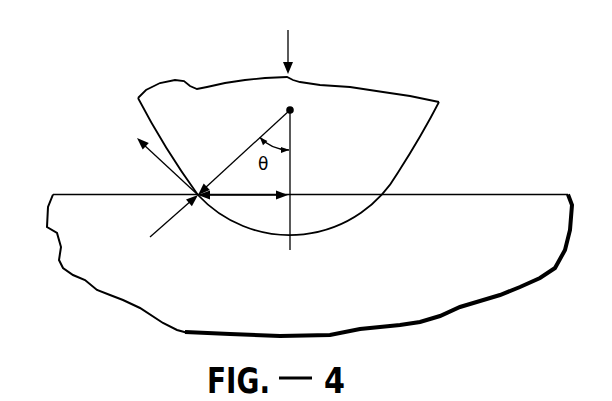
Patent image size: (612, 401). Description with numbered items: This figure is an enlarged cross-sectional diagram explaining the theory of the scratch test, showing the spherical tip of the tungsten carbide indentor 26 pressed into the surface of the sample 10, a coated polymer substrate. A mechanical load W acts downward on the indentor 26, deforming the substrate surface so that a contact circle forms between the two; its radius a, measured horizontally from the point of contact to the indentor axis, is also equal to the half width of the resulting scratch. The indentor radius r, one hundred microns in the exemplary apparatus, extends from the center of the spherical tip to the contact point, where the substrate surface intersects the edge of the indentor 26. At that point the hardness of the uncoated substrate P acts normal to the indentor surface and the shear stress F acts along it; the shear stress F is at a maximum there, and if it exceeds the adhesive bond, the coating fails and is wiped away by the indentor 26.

The sample 10 is at (430, 280).
The indentor 26 is at (420, 126).
The mechanical load W is at (289, 40).
The shear stress F is at (167, 166).
The hardness of the uncoated substrate P is at (174, 228).
The indentor radius r is at (244, 152).
The radius of the contact circle a is at (243, 207).